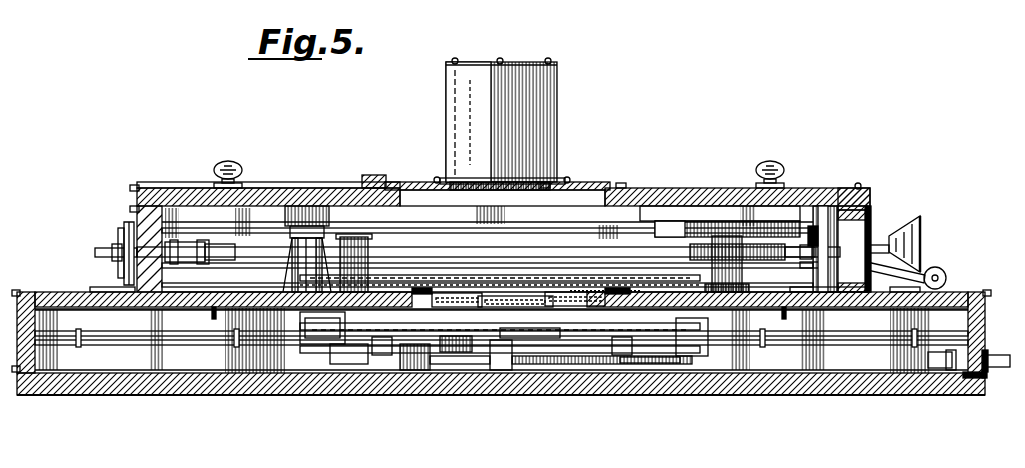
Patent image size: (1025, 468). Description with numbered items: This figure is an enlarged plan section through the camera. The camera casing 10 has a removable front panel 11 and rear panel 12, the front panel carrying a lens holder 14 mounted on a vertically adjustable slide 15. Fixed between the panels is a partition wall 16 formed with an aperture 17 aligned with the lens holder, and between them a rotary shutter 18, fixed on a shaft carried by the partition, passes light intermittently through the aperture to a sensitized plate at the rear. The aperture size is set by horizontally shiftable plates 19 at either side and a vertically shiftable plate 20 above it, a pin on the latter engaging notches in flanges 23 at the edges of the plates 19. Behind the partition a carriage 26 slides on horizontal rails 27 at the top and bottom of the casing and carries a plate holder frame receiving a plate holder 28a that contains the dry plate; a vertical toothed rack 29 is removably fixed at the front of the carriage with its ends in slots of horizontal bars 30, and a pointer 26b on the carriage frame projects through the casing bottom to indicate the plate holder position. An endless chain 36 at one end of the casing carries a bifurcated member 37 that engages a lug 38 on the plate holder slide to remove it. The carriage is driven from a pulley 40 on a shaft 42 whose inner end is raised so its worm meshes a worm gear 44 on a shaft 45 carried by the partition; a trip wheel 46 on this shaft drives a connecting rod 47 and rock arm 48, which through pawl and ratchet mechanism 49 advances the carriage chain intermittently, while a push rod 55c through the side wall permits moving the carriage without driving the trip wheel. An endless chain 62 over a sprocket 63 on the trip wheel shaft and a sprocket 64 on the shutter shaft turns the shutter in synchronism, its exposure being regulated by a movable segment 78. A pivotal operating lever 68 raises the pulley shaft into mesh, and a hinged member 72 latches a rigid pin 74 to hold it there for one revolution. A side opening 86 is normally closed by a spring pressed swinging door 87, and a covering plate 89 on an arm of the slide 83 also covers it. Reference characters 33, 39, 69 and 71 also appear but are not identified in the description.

The camera casing 10 is at (45, 303).
The front panel 11 is at (283, 198).
The rear panel 12 is at (215, 378).
The lens holder 14 is at (546, 130).
The vertically adjustable slide 15 is at (394, 186).
The partition wall 16 is at (150, 305).
The aperture 17 is at (524, 290).
The rotary shutter 18 is at (440, 282).
The horizontally shiftable plates 19 is at (632, 292).
The vertically shiftable plate 20 is at (480, 340).
The flanges 23 is at (578, 290).
The carriage 26 is at (300, 346).
The pointer 26b is at (503, 368).
The rails or guides 27 is at (142, 338).
The plate holder 28a is at (418, 346).
The toothed rack 29 is at (515, 333).
The horizontal bars 30 is at (482, 318).
The stop pin 33 is at (210, 315).
The endless chain 36 is at (988, 378).
The bifurcated member 37 is at (928, 357).
The lug 38 is at (692, 350).
The shaft end 39 is at (1000, 355).
The driving pulley 40 is at (126, 242).
The pulley shaft 42 is at (222, 256).
The worm gear 44 is at (662, 253).
The trip wheel shaft 45 is at (742, 282).
The trip wheel 46 is at (704, 221).
The connecting rod 47 is at (664, 206).
The rock arm 48 is at (322, 212).
The pawl and ratchet mechanism 49 is at (305, 218).
The push rod 55c is at (910, 228).
The endless chain 62 is at (525, 262).
The sprocket 63 is at (640, 292).
The sprocket 64 is at (364, 262).
The pivotal operating lever 68 is at (888, 258).
The crank arm 69 is at (916, 272).
The crank handle 71 is at (960, 272).
The hinged member 72 is at (824, 212).
The rigid pin 74 is at (847, 195).
The movable segment 78 is at (470, 276).
The slide 83 is at (482, 290).
The opening 86 is at (852, 249).
The swinging door 87 is at (870, 214).
The covering plate 89 is at (834, 274).